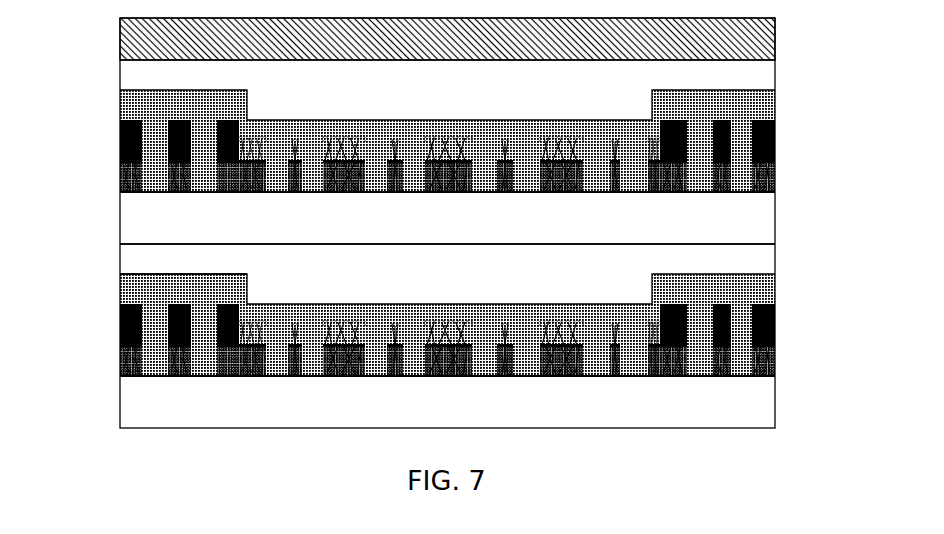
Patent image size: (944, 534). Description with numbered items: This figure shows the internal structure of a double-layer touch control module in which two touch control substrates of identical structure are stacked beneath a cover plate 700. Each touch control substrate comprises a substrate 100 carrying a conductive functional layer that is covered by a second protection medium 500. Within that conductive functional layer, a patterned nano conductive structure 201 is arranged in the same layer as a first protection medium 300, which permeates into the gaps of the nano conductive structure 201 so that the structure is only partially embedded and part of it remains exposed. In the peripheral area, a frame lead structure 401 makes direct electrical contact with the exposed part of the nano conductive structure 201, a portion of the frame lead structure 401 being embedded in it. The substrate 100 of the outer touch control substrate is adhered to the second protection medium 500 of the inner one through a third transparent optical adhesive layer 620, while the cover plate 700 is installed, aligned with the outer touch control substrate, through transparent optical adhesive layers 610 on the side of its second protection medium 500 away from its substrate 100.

The substrate 100 is at (767, 217).
The nano conductive structure 201 is at (776, 137).
The first protection medium 300 is at (125, 173).
The frame lead structure 401 is at (125, 128).
The second protection medium 500 is at (128, 103).
The transparent optical adhesive layer 610 is at (130, 70).
The third transparent optical adhesive layer 620 is at (130, 256).
The cover plate 700 is at (130, 36).